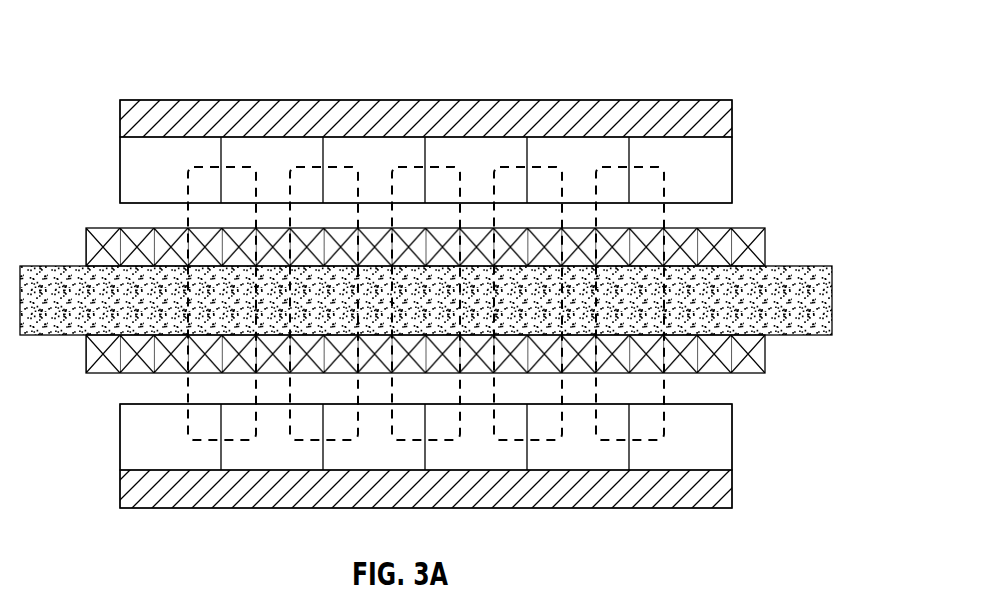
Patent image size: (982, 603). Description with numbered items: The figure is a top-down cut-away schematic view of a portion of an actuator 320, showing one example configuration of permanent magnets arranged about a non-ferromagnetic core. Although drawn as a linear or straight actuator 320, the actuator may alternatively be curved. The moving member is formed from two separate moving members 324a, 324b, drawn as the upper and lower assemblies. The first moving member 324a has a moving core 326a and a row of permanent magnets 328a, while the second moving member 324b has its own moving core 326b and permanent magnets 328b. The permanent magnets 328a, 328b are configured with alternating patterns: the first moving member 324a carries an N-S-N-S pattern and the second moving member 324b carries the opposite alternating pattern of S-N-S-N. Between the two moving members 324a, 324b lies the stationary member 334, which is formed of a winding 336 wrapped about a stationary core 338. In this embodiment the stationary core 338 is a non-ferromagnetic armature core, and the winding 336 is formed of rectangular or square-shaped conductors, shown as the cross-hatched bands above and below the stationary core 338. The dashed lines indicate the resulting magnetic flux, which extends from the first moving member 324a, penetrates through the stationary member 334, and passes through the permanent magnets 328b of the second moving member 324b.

The actuator 320 is at (144, 39).
The first moving member 324a is at (745, 148).
The second moving member 324b is at (745, 443).
The moving core 326a is at (565, 100).
The moving core 326b is at (718, 480).
The permanent magnets 328a is at (133, 148).
The permanent magnets 328b is at (130, 448).
The stationary member 334 is at (760, 216).
The winding 336 is at (108, 238).
The stationary core 338 is at (55, 283).